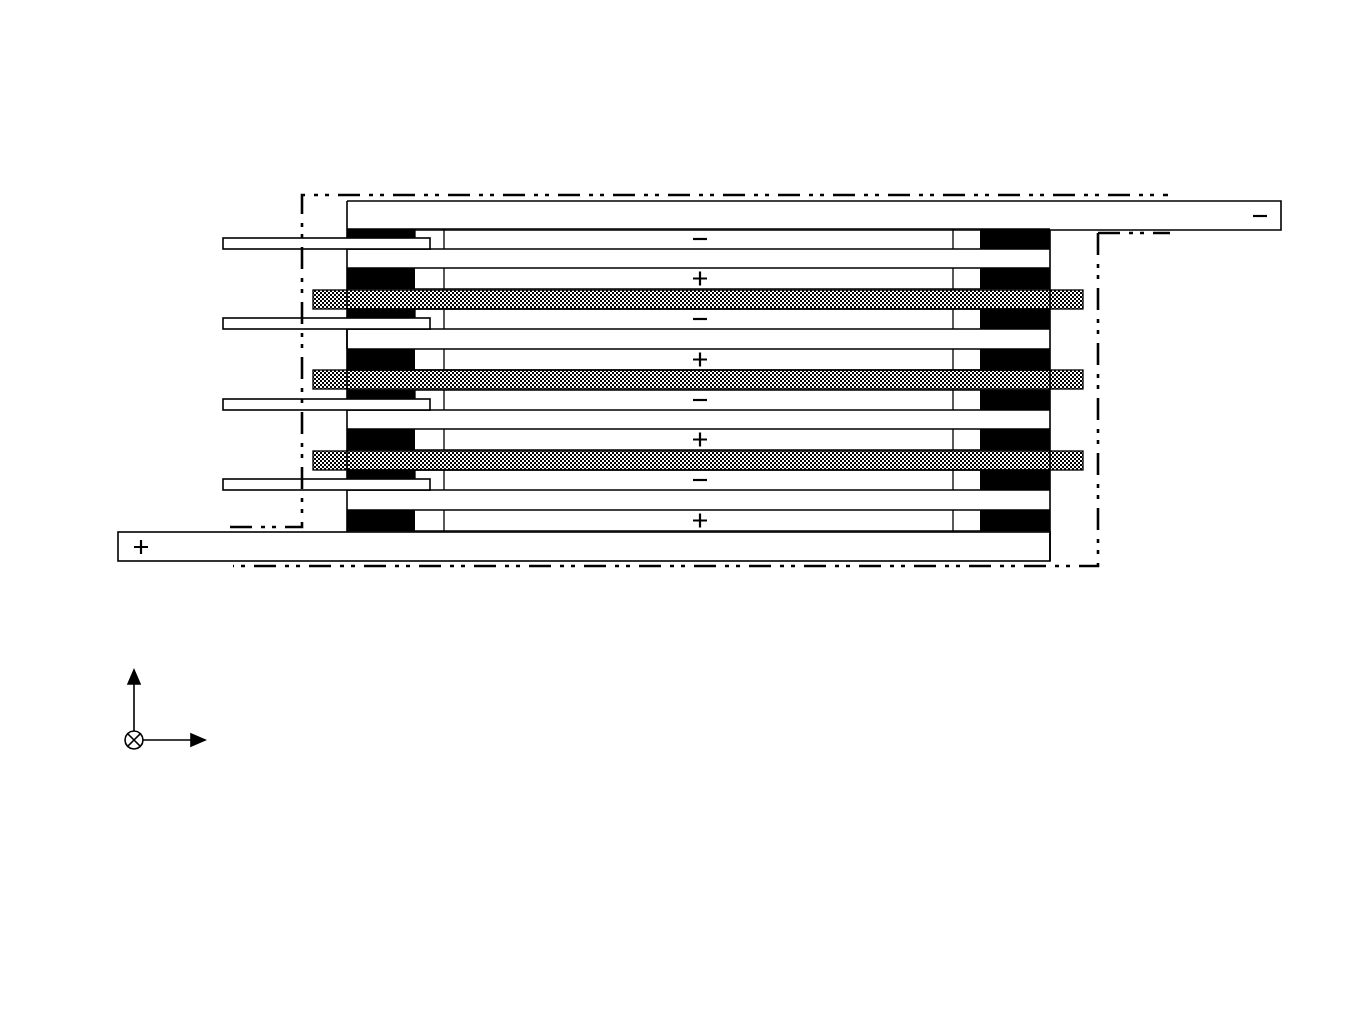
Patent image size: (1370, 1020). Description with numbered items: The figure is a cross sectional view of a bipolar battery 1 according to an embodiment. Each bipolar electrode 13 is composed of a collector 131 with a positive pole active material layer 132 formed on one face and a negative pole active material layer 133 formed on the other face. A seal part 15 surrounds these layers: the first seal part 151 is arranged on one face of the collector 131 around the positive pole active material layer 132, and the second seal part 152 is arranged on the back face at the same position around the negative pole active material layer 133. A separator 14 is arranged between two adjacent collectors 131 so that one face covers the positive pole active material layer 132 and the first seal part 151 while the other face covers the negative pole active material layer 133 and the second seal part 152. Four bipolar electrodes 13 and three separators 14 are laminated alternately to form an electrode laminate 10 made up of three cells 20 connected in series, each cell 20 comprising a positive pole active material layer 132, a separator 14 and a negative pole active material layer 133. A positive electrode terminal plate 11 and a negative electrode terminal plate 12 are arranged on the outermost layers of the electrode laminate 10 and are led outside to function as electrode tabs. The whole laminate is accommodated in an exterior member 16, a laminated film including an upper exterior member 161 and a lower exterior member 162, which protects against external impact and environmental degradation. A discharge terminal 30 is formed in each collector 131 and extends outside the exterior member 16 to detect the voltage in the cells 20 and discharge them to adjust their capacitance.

The bipolar battery 1 is at (280, 110).
The electrode laminate 10 is at (1290, 230).
The positive electrode terminal plate 11 is at (133, 545).
The negative electrode terminal plate 12 is at (1199, 216).
The bipolar electrode 13 is at (1187, 303).
The collector 131 is at (1043, 342).
The positive pole active material layer 132 is at (947, 362).
The negative pole active material layer 133 is at (947, 320).
The separator 14 is at (1085, 302).
The seal part 15 is at (1176, 378).
The first seal part 151 is at (1050, 402).
The second seal part 152 is at (1050, 438).
The exterior member 16 is at (360, 619).
The upper exterior member 161 is at (284, 533).
The lower exterior member 162 is at (338, 567).
The cell 20 is at (1107, 430).
The discharge terminal 30 is at (228, 242).